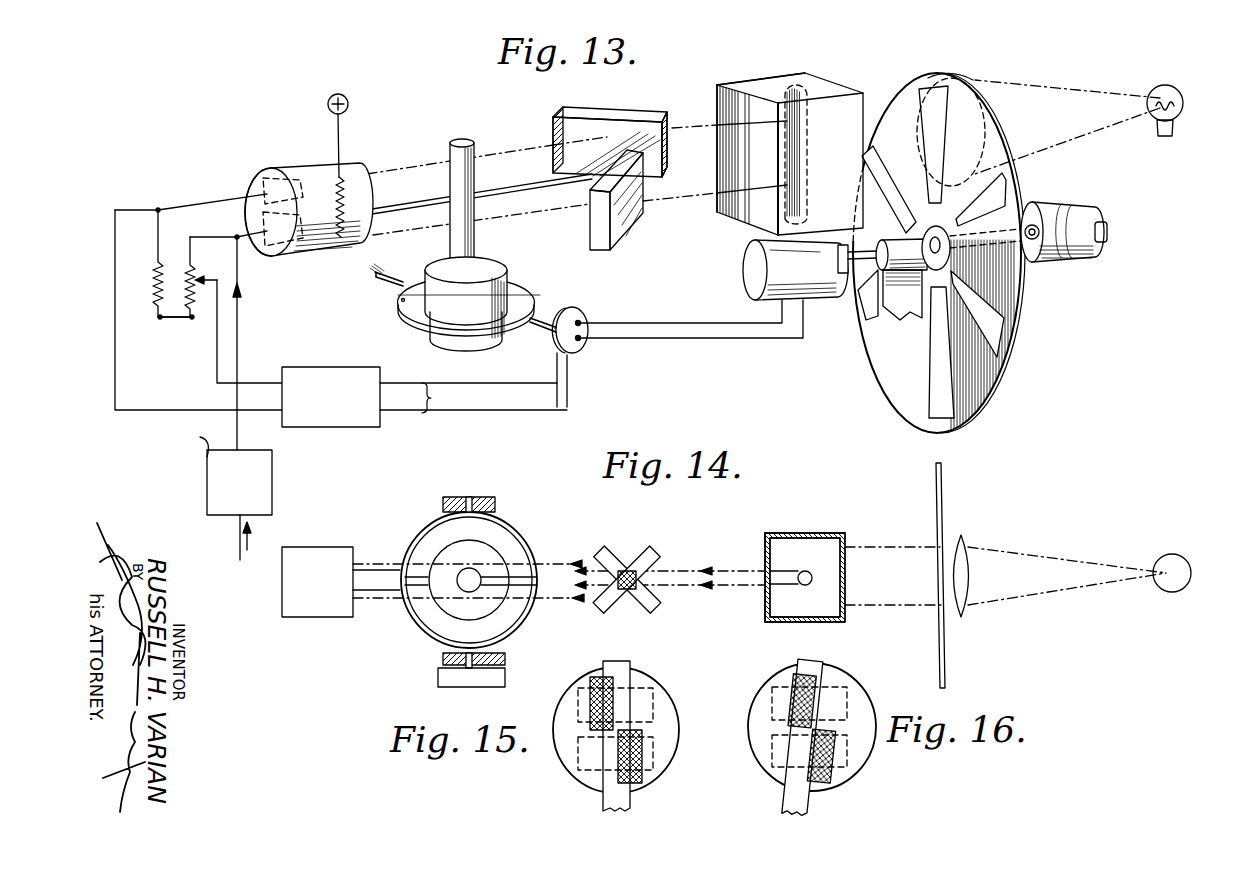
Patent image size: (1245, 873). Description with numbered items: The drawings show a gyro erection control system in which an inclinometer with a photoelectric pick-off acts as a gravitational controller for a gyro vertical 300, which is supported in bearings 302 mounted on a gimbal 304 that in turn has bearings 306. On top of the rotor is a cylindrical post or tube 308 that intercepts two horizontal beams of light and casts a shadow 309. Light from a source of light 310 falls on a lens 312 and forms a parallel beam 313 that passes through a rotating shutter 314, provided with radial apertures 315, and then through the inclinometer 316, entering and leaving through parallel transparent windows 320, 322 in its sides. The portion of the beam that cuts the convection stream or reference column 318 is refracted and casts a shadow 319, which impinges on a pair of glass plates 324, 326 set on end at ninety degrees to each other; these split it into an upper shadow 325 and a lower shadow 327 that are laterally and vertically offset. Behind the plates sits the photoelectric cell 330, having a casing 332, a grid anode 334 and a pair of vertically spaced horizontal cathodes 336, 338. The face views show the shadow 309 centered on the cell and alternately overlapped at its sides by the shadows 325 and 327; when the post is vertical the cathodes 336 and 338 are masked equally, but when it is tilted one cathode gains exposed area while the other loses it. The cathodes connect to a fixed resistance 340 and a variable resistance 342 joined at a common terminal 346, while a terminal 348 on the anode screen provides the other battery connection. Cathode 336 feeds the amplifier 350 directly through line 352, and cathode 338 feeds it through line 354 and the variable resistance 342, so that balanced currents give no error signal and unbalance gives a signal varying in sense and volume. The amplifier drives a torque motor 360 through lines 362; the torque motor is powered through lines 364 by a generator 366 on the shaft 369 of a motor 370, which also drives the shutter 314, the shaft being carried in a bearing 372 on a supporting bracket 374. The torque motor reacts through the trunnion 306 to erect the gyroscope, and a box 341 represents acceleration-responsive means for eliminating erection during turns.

In FIG. 13, the gyro vertical 300 is at (514, 268).
In FIG. 14, the gyro vertical 300 is at (493, 547).
In FIG. 13, the bearings 302 is at (400, 316).
In FIG. 13, the gimbal 304 is at (400, 298).
In FIG. 13, the bearings 306 is at (386, 277).
In FIG. 13, the cylindrical post 308 is at (470, 141).
In FIG. 14, the cylindrical post 308 is at (456, 573).
In FIG. 15, the cylindrical post 308 is at (637, 659).
In FIG. 16, the cylindrical post 308 is at (798, 808).
In FIG. 14, the shadow 309 is at (370, 605).
In FIG. 13, the source of light 310 is at (1170, 90).
In FIG. 14, the source of light 310 is at (1181, 557).
In FIG. 13, the lens 312 is at (967, 80).
In FIG. 14, the lens 312 is at (964, 538).
In FIG. 14, the parallel beam 313 is at (883, 547).
In FIG. 13, the shutter 314 is at (1003, 140).
In FIG. 14, the shutter 314 is at (944, 483).
In FIG. 13, the radial apertures 315 is at (880, 414).
In FIG. 13, the inclinometer 316 is at (833, 83).
In FIG. 14, the inclinometer 316 is at (807, 533).
In FIG. 13, the convection stream 318 is at (800, 130).
In FIG. 14, the convection stream 318 is at (810, 571).
In FIG. 13, the shadow 319 is at (687, 186).
In FIG. 14, the shadow 319 is at (723, 568).
In FIG. 13, the transparent window 320 is at (860, 87).
In FIG. 14, the transparent window 320 is at (847, 585).
In FIG. 13, the transparent window 322 is at (748, 82).
In FIG. 14, the transparent window 322 is at (765, 603).
In FIG. 13, the glass plate 324 is at (640, 105).
In FIG. 14, the glass plate 324 is at (610, 557).
In FIG. 13, the upper shadow 325 is at (520, 143).
In FIG. 14, the upper shadow 325 is at (367, 561).
In FIG. 15, the upper shadow 325 is at (580, 682).
In FIG. 16, the upper shadow 325 is at (785, 680).
In FIG. 13, the glass plate 326 is at (627, 227).
In FIG. 14, the glass plate 326 is at (643, 562).
In FIG. 13, the lower shadow 327 is at (515, 220).
In FIG. 14, the lower shadow 327 is at (372, 599).
In FIG. 15, the lower shadow 327 is at (643, 761).
In FIG. 16, the lower shadow 327 is at (837, 778).
In FIG. 13, the photoelectric cell 330 is at (325, 250).
In FIG. 14, the photoelectric cell 330 is at (332, 547).
In FIG. 15, the photoelectric cell 330 is at (680, 695).
In FIG. 13, the casing 332 is at (262, 163).
In FIG. 15, the casing 332 is at (678, 719).
In FIG. 16, the casing 332 is at (868, 700).
In FIG. 13, the grid anode 334 is at (343, 177).
In FIG. 13, the cathode 336 is at (297, 180).
In FIG. 15, the cathode 336 is at (597, 705).
In FIG. 16, the cathode 336 is at (835, 685).
In FIG. 13, the cathode 338 is at (296, 255).
In FIG. 15, the cathode 338 is at (580, 762).
In FIG. 16, the cathode 338 is at (772, 755).
In FIG. 13, the fixed resistance 340 is at (158, 255).
In FIG. 13, the box 341 is at (272, 482).
In FIG. 13, the variable resistance 342 is at (197, 243).
In FIG. 13, the common terminal 346 is at (192, 322).
In FIG. 13, the terminal 348 is at (348, 98).
In FIG. 13, the amplifier 350 is at (330, 428).
In FIG. 13, the line 352 is at (118, 381).
In FIG. 13, the line 354 is at (215, 372).
In FIG. 13, the torque motor 360 is at (584, 356).
In FIG. 13, the lines 362 is at (473, 398).
In FIG. 13, the lines 364 is at (678, 324).
In FIG. 13, the generator 366 is at (749, 280).
In FIG. 13, the shaft 369 is at (860, 262).
In FIG. 13, the motor 370 is at (1097, 212).
In FIG. 13, the bearing 372 is at (903, 247).
In FIG. 13, the supporting bracket 374 is at (900, 304).